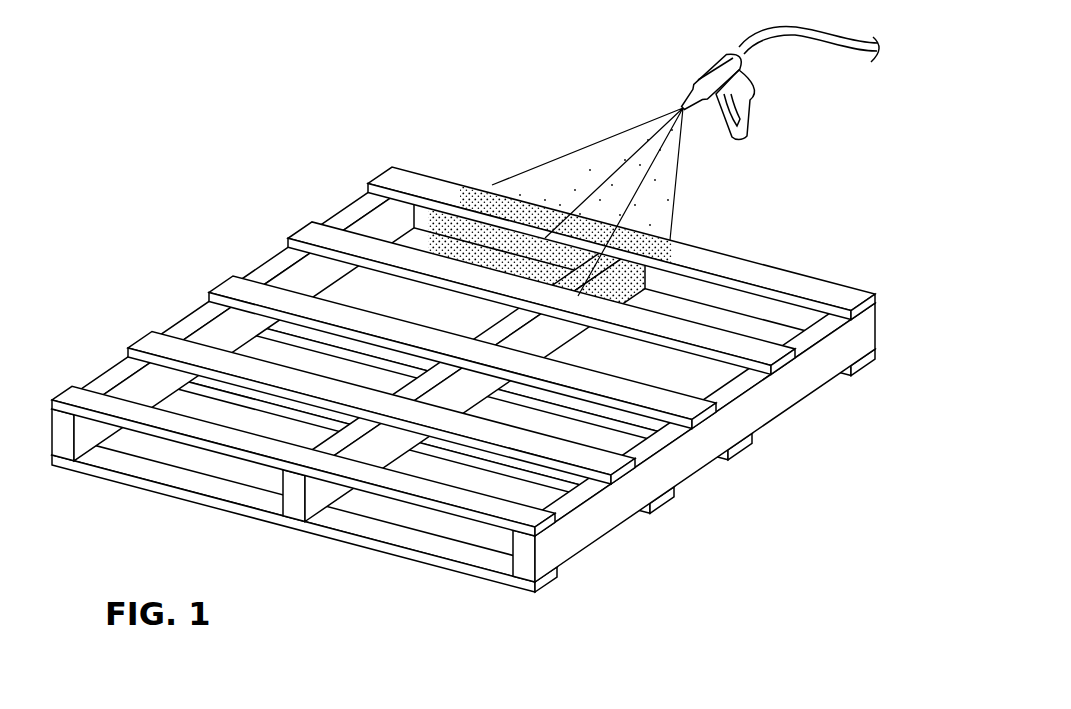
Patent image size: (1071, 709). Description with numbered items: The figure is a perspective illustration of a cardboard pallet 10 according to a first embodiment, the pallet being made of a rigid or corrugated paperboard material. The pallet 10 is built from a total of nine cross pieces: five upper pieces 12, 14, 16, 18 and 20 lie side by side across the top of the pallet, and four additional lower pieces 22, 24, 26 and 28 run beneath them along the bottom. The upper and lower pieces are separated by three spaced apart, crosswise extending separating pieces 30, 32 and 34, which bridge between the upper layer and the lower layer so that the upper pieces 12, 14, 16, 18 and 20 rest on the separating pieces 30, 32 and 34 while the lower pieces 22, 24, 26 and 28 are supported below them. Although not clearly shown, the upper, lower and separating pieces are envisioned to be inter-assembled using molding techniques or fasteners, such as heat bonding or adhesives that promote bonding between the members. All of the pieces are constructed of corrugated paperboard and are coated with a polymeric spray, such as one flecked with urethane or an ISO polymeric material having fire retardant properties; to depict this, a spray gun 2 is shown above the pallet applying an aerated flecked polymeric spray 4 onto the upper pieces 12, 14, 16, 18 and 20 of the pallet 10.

The spray gun 2 is at (713, 63).
The aerated flecked polymeric spray 4 is at (597, 140).
The cardboard pallet 10 is at (150, 206).
The upper piece 12 is at (73, 394).
The upper piece 14 is at (152, 343).
The upper piece 16 is at (233, 288).
The upper piece 18 is at (313, 233).
The upper piece 20 is at (392, 180).
The lower piece 22 is at (418, 539).
The lower piece 24 is at (668, 499).
The lower piece 26 is at (748, 443).
The lower piece 28 is at (866, 378).
The separating piece 30 is at (80, 447).
The separating piece 32 is at (290, 503).
The separating piece 34 is at (523, 563).